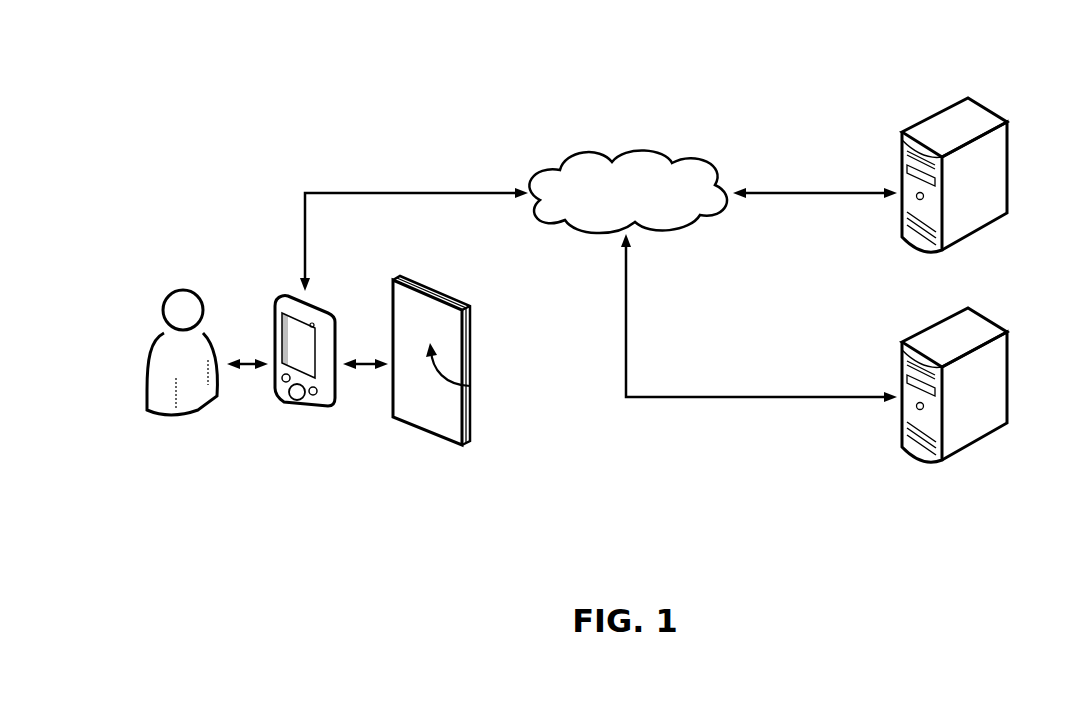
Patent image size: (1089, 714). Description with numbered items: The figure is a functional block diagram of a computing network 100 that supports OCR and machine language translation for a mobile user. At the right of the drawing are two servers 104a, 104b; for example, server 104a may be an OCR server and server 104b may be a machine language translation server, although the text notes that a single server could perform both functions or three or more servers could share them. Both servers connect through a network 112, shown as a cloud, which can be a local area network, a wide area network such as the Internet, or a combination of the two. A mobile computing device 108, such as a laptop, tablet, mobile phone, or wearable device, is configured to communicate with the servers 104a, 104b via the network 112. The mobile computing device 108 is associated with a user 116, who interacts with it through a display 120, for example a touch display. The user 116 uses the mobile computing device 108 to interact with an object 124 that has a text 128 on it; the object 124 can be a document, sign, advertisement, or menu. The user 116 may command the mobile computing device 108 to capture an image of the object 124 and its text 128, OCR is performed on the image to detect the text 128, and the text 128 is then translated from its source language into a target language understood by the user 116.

The computing network 100 is at (280, 37).
The server 104a is at (985, 108).
The server 104b is at (985, 316).
The mobile computing device 108 is at (302, 408).
The network 112 is at (627, 152).
The user 116 is at (184, 290).
The display 120 is at (294, 326).
The object 124 is at (425, 435).
The text 128 is at (470, 386).